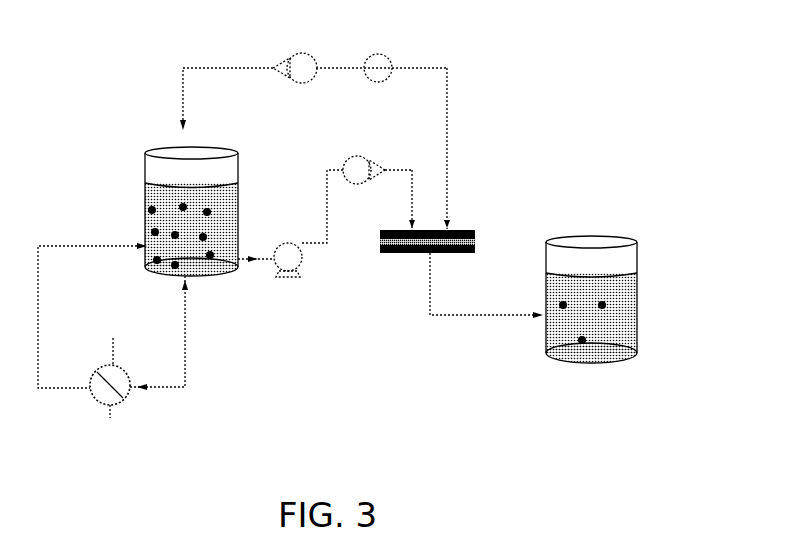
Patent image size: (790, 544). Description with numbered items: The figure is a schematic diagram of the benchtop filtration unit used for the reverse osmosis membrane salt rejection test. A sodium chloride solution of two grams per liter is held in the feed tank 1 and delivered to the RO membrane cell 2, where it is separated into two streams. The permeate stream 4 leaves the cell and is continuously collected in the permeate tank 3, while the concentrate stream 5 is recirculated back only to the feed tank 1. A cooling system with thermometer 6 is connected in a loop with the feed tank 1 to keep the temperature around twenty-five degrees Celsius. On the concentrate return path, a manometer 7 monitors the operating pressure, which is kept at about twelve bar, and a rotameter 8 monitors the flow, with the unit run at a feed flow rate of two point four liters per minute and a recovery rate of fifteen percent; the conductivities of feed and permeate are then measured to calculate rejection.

The feed tank 1 is at (164, 218).
The RO membrane cell 2 is at (439, 160).
The permeate tank 3 is at (619, 299).
The permeate stream 4 is at (486, 306).
The concentrate stream 5 is at (205, 99).
The cooling system with thermometer 6 is at (113, 360).
The manometer 7 is at (381, 47).
The rotameter 8 is at (300, 92).